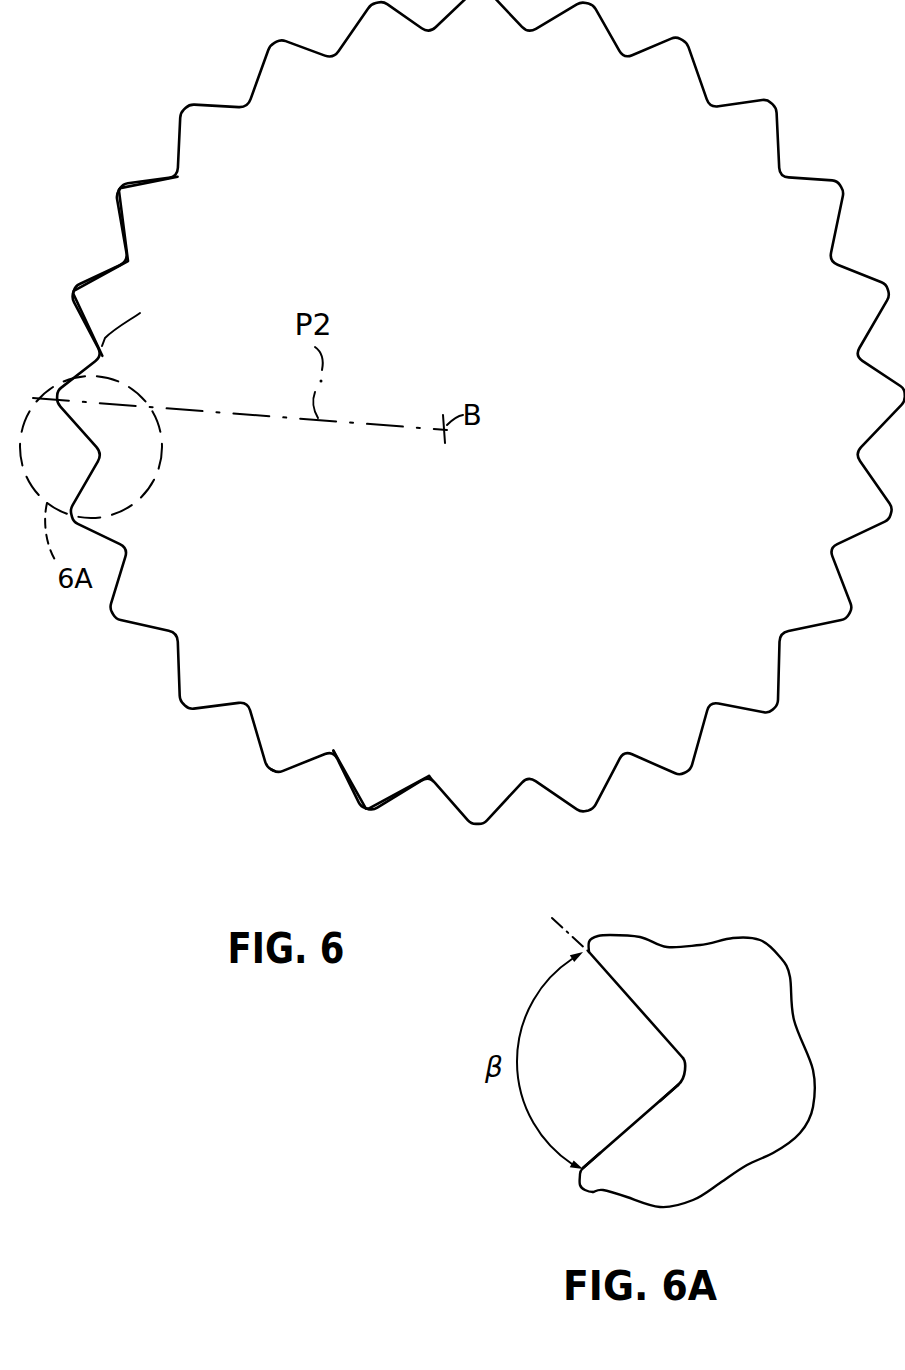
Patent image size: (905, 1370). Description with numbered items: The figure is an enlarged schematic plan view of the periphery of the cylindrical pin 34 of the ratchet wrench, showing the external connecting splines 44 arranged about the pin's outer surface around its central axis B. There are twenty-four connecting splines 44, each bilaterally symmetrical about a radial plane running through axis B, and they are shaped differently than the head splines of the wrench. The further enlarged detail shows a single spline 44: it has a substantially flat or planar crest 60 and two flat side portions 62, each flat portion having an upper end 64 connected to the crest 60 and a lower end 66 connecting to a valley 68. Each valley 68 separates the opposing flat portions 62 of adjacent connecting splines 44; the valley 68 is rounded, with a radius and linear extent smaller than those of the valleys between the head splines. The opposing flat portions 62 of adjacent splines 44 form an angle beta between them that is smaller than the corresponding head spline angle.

In FIG. 6, the cylindrical pin 34 is at (840, 105).
In FIG. 6, the connecting splines 44 is at (119, 191).
In FIG. 6, the crest 60 is at (116, 193).
In FIG. 6A, the crest 60 is at (580, 1180).
In FIG. 6, the flat side portions 62 is at (348, 772).
In FIG. 6A, the flat side portions 62 is at (618, 995).
In FIG. 6A, the upper end 64 is at (581, 1168).
In FIG. 6A, the lower end 66 is at (673, 1097).
In FIG. 6, the valley 68 is at (335, 749).
In FIG. 6A, the valley 68 is at (683, 1058).